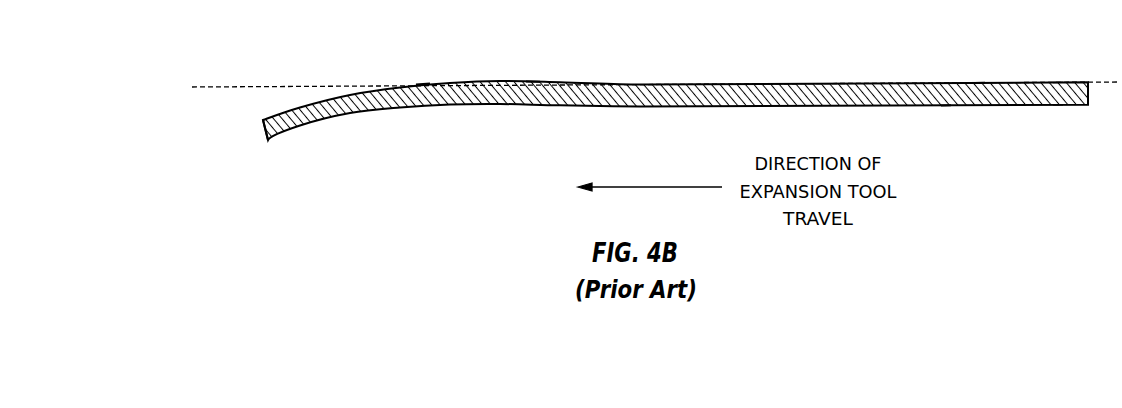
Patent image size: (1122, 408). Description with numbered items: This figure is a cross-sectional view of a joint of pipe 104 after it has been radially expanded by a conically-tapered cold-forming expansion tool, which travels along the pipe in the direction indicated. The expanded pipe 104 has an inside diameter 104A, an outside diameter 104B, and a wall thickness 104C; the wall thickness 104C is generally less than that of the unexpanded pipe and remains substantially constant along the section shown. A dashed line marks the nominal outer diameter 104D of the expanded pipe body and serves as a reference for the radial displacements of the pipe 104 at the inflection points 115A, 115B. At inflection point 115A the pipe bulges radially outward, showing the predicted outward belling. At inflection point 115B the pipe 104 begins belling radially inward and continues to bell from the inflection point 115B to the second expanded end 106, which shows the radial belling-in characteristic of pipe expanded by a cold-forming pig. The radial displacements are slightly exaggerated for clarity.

The expanded pipe 104 is at (863, 108).
The ID 104A is at (946, 106).
The OD 104B is at (980, 82).
The wall thickness 104C is at (1058, 47).
The nominal outer diameter 104D is at (226, 87).
The second end 106 is at (263, 133).
The inflection point 115A is at (533, 82).
The inflection point 115B is at (423, 83).